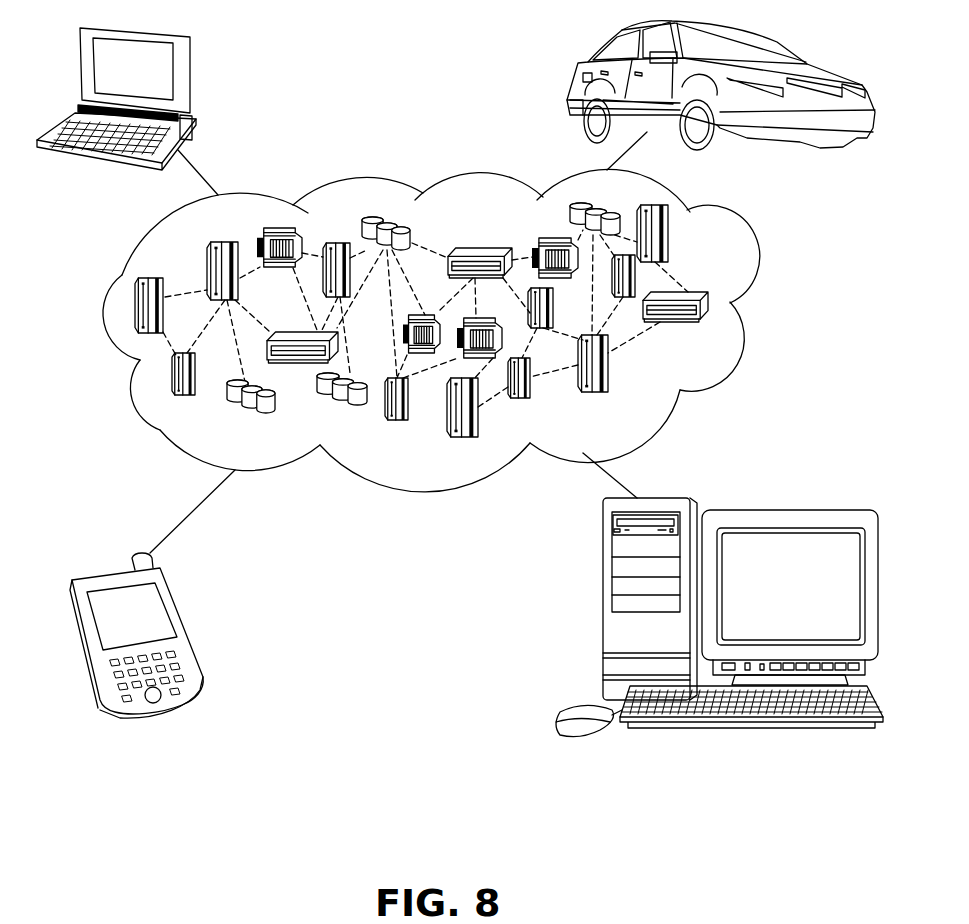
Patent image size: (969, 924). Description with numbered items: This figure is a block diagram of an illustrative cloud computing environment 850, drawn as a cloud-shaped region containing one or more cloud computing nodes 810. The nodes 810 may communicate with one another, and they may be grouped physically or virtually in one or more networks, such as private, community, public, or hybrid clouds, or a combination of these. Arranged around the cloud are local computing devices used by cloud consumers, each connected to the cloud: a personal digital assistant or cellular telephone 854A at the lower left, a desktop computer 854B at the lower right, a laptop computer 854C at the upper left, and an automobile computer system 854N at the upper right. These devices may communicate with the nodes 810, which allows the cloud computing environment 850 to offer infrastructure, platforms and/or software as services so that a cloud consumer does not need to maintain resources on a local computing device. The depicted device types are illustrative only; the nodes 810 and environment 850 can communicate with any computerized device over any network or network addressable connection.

The cloud computing environment 850 is at (753, 265).
The cloud computing nodes 810 is at (745, 328).
The personal digital assistant or cellular telephone 854A is at (183, 628).
The desktop computer 854B is at (602, 608).
The laptop computer 854C is at (193, 73).
The automobile computer system 854N is at (573, 78).